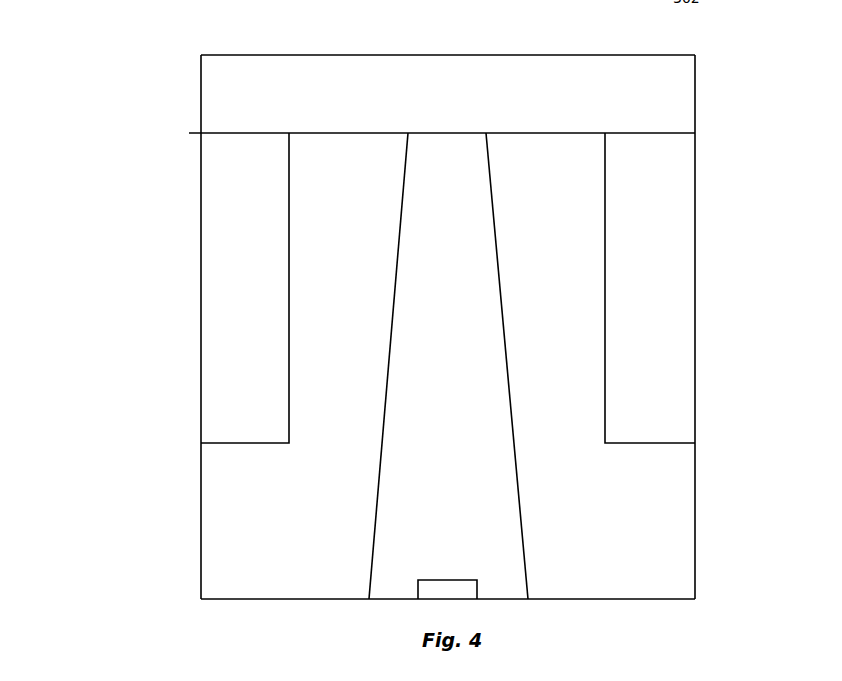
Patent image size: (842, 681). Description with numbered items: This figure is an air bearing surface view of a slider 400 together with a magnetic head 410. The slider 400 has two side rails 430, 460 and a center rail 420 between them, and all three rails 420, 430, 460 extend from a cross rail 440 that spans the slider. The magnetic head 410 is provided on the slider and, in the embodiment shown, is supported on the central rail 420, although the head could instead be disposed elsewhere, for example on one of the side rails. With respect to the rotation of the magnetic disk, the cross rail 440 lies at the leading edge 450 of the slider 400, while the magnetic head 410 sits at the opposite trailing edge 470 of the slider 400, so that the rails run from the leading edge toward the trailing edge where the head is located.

The slider 400 is at (69, 552).
The magnetic head 410 is at (437, 591).
The center rail 420 is at (418, 434).
The side rail 430 is at (239, 260).
The cross rail 440 is at (240, 85).
The leading edge 450 is at (268, 55).
The side rail 460 is at (674, 279).
The trailing edge 470 is at (603, 599).